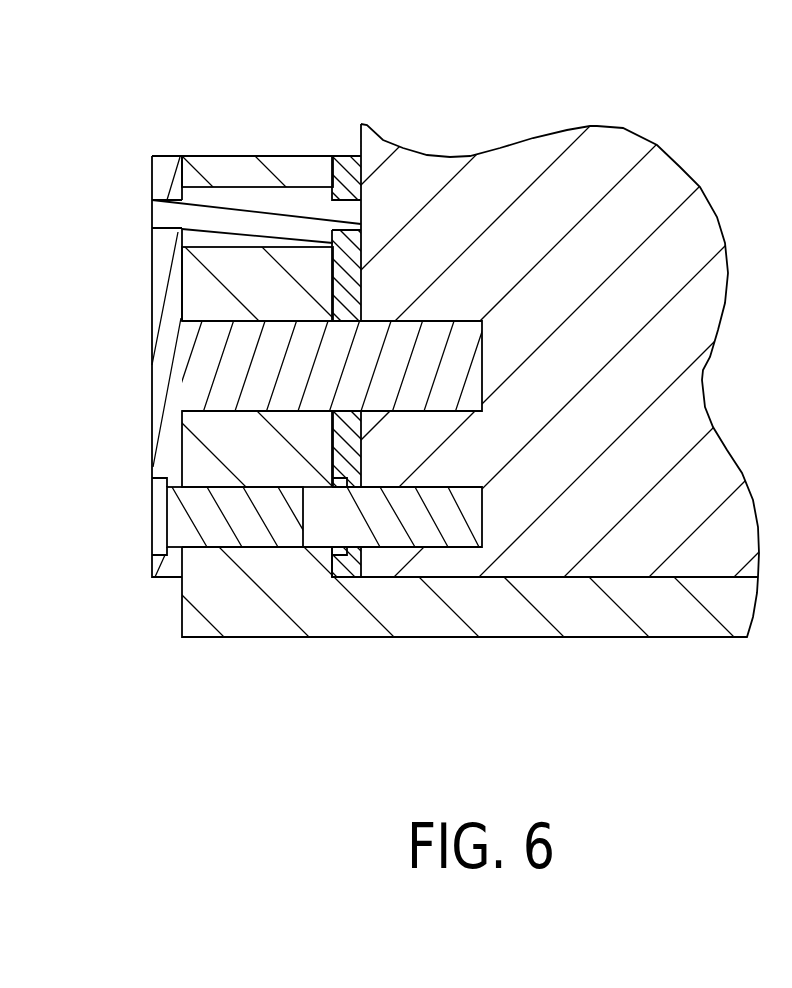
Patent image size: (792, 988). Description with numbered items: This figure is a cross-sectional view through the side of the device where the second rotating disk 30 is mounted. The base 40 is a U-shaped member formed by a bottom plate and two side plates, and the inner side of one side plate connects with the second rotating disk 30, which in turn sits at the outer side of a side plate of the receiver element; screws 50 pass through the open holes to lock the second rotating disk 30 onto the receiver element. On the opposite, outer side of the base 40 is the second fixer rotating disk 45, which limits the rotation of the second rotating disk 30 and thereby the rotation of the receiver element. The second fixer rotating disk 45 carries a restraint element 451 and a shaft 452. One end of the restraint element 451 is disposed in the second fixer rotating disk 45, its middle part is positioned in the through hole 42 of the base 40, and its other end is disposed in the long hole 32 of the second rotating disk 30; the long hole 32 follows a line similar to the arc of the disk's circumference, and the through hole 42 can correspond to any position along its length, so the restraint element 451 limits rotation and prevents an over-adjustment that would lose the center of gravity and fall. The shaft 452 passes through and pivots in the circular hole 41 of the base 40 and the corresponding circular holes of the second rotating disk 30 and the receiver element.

The second rotating disk 30 is at (352, 568).
The long hole 32 is at (338, 158).
The base 40 is at (213, 617).
The circular hole 41 is at (240, 411).
The through hole 42 is at (300, 187).
The second fixer rotating disk 45 is at (167, 263).
The restraint element 451 is at (265, 207).
The shaft 452 is at (452, 340).
The screw 50 is at (193, 525).